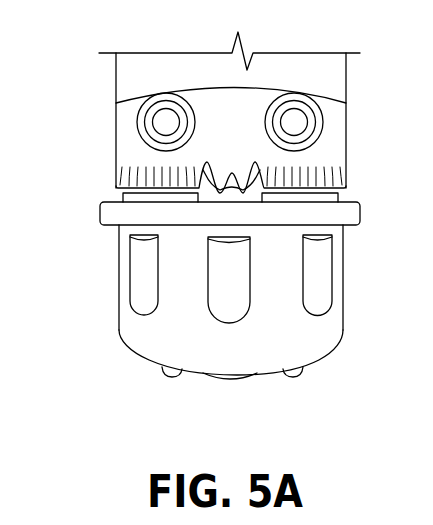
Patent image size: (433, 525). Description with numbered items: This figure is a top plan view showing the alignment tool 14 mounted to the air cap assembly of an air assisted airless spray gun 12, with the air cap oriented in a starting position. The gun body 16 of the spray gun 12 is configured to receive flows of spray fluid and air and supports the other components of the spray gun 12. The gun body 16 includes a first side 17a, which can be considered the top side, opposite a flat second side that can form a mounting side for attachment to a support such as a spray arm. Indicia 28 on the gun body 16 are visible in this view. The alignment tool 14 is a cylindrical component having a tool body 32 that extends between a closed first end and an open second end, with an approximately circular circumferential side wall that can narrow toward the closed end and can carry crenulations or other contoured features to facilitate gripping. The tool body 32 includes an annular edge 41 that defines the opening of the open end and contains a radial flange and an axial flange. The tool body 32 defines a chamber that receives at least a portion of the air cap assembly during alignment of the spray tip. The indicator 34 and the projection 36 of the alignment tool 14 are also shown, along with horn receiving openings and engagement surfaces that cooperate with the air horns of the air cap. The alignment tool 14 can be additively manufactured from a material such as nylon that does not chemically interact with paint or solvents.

The spray gun 12 is at (320, 68).
The alignment tool 14 is at (116, 363).
The gun body 16 is at (358, 127).
The first side 17a is at (212, 68).
The indicia 28 is at (147, 133).
The tool body 32 is at (109, 276).
The indicator 34 is at (239, 207).
The projection 36 is at (243, 389).
The annular edge 41 is at (100, 179).